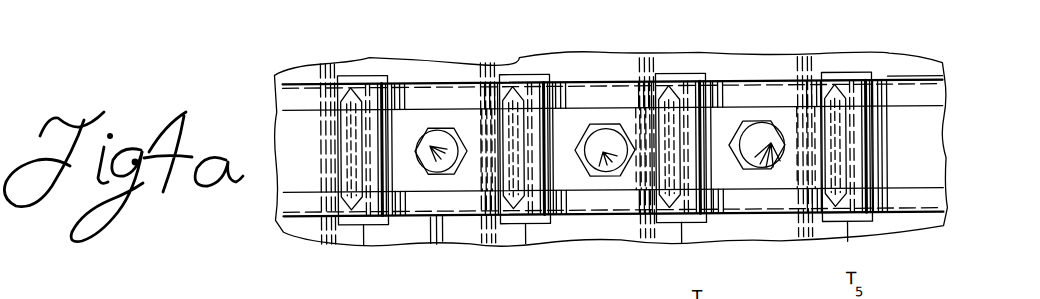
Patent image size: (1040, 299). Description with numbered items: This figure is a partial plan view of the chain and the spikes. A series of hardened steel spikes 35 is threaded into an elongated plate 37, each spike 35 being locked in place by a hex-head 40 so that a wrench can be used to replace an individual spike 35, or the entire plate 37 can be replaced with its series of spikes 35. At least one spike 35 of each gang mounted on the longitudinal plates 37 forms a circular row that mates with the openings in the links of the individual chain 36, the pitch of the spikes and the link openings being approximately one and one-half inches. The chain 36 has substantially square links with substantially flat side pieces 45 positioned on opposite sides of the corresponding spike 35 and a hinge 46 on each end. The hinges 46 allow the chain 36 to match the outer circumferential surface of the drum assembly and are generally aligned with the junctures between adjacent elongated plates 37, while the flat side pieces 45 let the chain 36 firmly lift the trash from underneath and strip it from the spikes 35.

The spike 35 is at (605, 152).
The chain 36 is at (347, 97).
The elongated plate 37 is at (915, 70).
The hex-head 40 is at (607, 128).
The flat side piece 45 is at (632, 203).
The hinge 46 is at (688, 202).